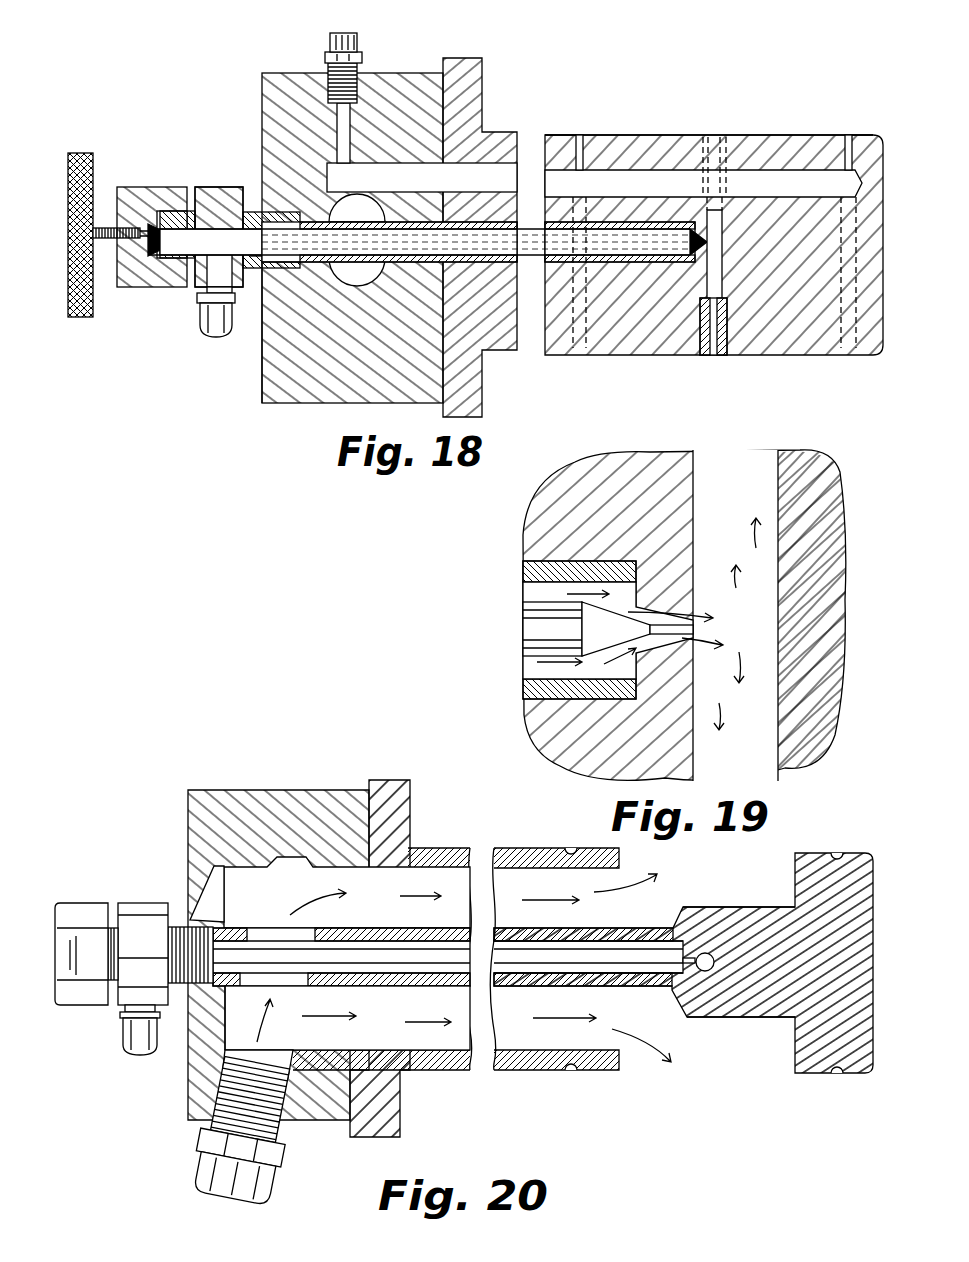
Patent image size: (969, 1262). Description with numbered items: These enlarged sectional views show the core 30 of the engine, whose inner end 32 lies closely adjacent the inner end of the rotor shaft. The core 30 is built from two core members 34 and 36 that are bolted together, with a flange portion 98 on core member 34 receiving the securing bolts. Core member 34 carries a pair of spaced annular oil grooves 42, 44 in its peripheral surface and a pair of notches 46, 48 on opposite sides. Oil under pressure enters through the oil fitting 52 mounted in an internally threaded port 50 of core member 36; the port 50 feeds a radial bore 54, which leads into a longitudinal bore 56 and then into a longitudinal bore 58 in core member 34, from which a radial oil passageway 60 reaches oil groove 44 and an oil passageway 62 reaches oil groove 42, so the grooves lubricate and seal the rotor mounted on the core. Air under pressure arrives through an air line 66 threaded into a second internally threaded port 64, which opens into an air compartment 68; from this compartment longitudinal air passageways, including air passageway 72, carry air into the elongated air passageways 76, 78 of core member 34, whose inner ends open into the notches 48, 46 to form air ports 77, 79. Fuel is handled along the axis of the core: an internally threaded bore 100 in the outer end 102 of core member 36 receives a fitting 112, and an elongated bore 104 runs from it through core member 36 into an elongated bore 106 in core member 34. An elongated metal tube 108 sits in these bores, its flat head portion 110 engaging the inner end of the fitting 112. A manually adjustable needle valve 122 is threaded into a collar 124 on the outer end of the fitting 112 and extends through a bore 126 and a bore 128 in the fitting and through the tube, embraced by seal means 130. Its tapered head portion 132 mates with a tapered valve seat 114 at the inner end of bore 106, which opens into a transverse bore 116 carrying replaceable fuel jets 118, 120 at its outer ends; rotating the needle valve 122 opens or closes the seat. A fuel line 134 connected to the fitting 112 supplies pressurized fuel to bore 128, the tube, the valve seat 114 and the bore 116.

In FIG. 18, the core 30 is at (222, 190).
In FIG. 20, the core 30 is at (150, 905).
In FIG. 18, the inner end of core 32 is at (880, 330).
In FIG. 20, the inner end of core 32 is at (873, 1050).
In FIG. 18, the core member 34 is at (657, 134).
In FIG. 20, the core member 34 is at (455, 848).
In FIG. 18, the core member 36 is at (415, 172).
In FIG. 20, the core member 36 is at (278, 790).
In FIG. 18, the annular oil groove 42 is at (847, 142).
In FIG. 20, the annular oil groove 42 is at (840, 858).
In FIG. 18, the annular oil groove 44 is at (580, 138).
In FIG. 20, the notch 46 is at (783, 1023).
In FIG. 20, the notch 48 is at (788, 892).
In FIG. 18, the internally threaded port 50 is at (322, 72).
In FIG. 18, the oil fitting 52 is at (360, 42).
In FIG. 18, the bore 54 is at (337, 127).
In FIG. 18, the longitudinally extending bore 56 is at (483, 80).
In FIG. 18, the longitudinally extending bore 58 is at (673, 182).
In FIG. 18, the radially extending oil passageway 60 is at (655, 135).
In FIG. 18, the oil passageway 62 is at (862, 140).
In FIG. 20, the internally threaded port 64 is at (303, 1112).
In FIG. 20, the air line 66 is at (203, 1173).
In FIG. 18, the air compartment 68 is at (333, 262).
In FIG. 20, the air compartment 68 is at (290, 857).
In FIG. 20, the air passageway 72 is at (343, 1050).
In FIG. 20, the elongated air passageway 76 is at (550, 887).
In FIG. 20, the air port 77 is at (643, 872).
In FIG. 20, the elongated air passageway 78 is at (564, 1030).
In FIG. 20, the air port 79 is at (658, 1046).
In FIG. 20, the flange portion 98 is at (417, 780).
In FIG. 18, the internally threaded bore 100 is at (262, 207).
In FIG. 20, the internally threaded bore 100 is at (188, 920).
In FIG. 18, the outer end of core member 102 is at (258, 383).
In FIG. 18, the elongated bore 104 is at (358, 268).
In FIG. 20, the elongated bore 104 is at (353, 928).
In FIG. 18, the elongated longitudinally extending bore 106 is at (628, 262).
In FIG. 19, the elongated longitudinally extending bore 106 is at (628, 608).
In FIG. 20, the elongated longitudinally extending bore 106 is at (512, 986).
In FIG. 18, the elongated metal tube 108 is at (487, 262).
In FIG. 20, the elongated metal tube 108 is at (387, 986).
In FIG. 18, the flat head portion 110 is at (262, 268).
In FIG. 20, the flat head portion 110 is at (222, 992).
In FIG. 18, the fitting 112 is at (205, 190).
In FIG. 19, the tapered valve seat 114 is at (667, 615).
In FIG. 18, the transversely extending bore 116 is at (717, 273).
In FIG. 19, the transversely extending bore 116 is at (744, 691).
In FIG. 20, the transversely extending bore 116 is at (708, 968).
In FIG. 18, the replaceable fuel jet 118 is at (727, 134).
In FIG. 18, the replaceable fuel jet 120 is at (714, 357).
In FIG. 18, the manually adjustable needle valve 122 is at (83, 153).
In FIG. 18, the collar 124 is at (137, 190).
In FIG. 20, the collar 124 is at (85, 905).
In FIG. 18, the bore 126 is at (178, 250).
In FIG. 18, the bore 128 is at (255, 258).
In FIG. 18, the seal means 130 is at (153, 250).
In FIG. 18, the tapered head portion 132 is at (706, 254).
In FIG. 19, the tapered head portion 132 is at (611, 625).
In FIG. 20, the tapered head portion 132 is at (696, 953).
In FIG. 18, the fuel line 134 is at (203, 317).
In FIG. 20, the fuel line 134 is at (123, 1037).